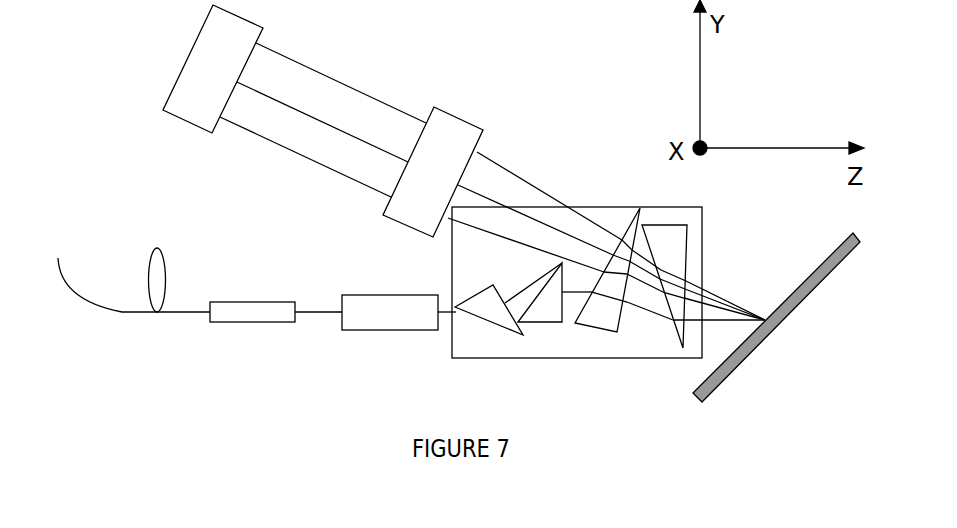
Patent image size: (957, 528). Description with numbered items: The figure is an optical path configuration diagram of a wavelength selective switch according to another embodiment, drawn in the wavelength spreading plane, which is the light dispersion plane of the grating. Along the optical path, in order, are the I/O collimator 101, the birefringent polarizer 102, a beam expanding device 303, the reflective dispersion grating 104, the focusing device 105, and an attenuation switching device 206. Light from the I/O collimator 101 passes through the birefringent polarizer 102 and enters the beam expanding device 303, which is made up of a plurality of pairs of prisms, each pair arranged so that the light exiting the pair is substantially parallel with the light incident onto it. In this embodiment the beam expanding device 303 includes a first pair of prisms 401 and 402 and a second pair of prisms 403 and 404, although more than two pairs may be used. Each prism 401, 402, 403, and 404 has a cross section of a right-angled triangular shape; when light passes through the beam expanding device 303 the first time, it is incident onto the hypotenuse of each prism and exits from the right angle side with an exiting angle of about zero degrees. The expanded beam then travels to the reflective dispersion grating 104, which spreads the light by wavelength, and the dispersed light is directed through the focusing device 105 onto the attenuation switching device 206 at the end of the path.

The I/O collimator 101 is at (276, 337).
The birefringent polarizer 102 is at (399, 334).
The reflective dispersion grating 104 is at (776, 321).
The focusing device 105 is at (475, 189).
The attenuation switching device 206 is at (278, 101).
The beam expanding device 303 is at (596, 194).
The prism 401 is at (488, 325).
The prism 402 is at (550, 325).
The prism 403 is at (607, 327).
The prism 404 is at (673, 322).